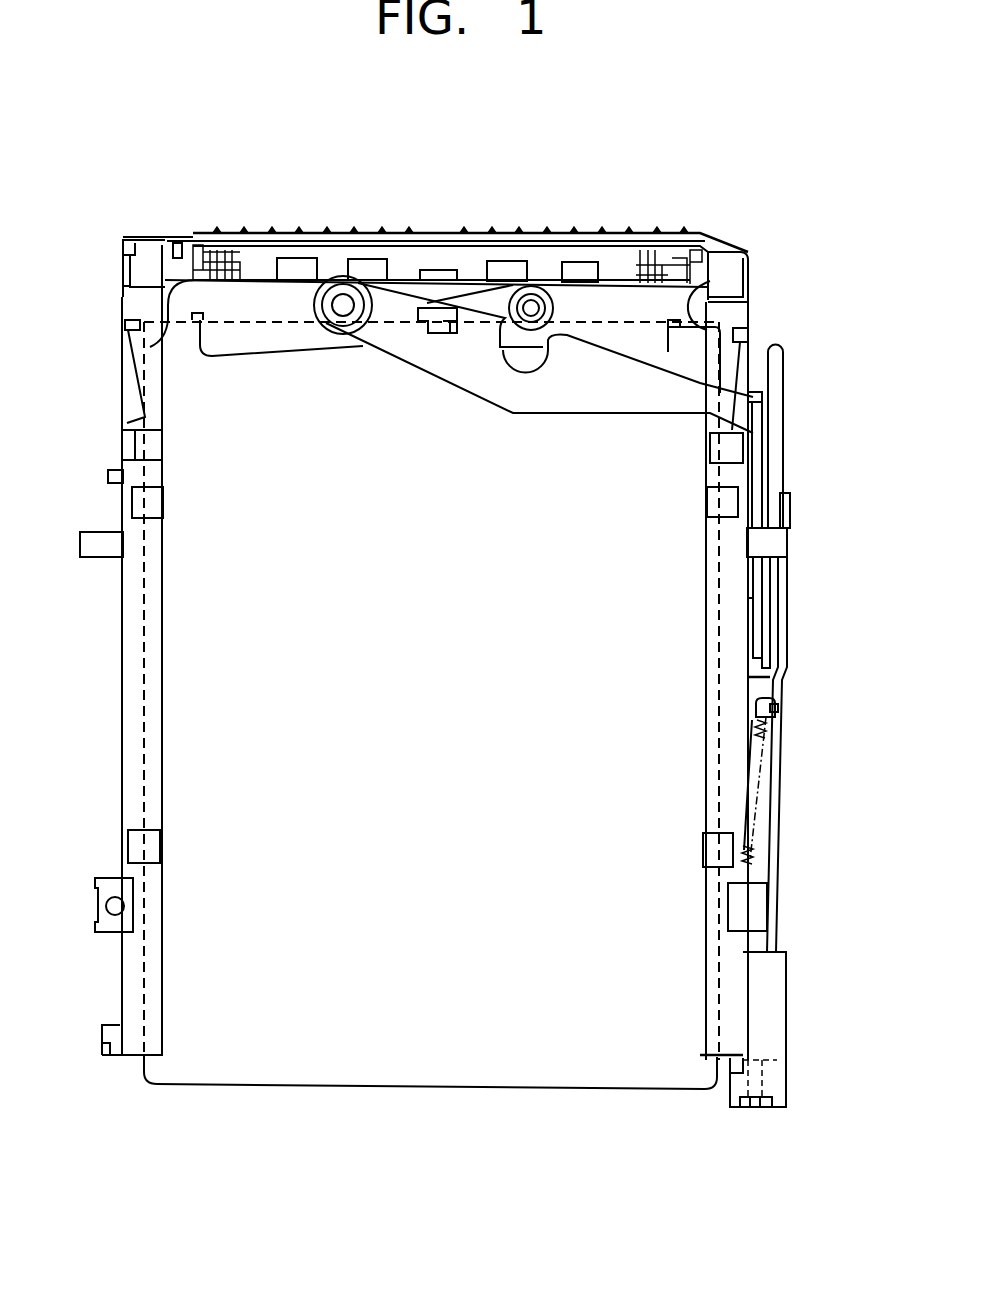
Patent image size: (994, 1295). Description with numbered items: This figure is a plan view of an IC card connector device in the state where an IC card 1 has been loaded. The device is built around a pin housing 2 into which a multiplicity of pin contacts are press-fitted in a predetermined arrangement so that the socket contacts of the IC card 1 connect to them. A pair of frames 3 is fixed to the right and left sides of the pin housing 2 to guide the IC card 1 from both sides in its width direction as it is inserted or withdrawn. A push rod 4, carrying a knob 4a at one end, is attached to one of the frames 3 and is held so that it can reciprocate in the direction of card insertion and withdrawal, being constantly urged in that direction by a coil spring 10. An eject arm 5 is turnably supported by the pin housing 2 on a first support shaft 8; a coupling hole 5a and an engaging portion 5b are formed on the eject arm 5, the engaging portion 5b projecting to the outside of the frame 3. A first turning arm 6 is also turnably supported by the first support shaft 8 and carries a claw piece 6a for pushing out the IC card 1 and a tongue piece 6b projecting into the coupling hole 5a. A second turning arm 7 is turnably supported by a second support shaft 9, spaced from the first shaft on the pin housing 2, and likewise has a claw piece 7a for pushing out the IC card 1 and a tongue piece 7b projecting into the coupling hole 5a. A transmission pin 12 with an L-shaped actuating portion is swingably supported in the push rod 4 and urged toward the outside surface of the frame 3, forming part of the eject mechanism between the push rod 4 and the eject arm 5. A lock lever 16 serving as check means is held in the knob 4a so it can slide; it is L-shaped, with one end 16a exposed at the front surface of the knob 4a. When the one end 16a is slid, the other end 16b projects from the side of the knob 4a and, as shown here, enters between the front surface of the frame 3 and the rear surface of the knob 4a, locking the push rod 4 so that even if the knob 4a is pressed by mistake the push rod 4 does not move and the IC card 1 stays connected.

The IC card 1 is at (452, 1040).
The pin housing 2 is at (543, 260).
The frames 3 is at (130, 640).
The push rod 4 is at (784, 470).
The knob 4a is at (773, 1020).
The eject arm 5 is at (590, 387).
The coupling hole 5a is at (417, 302).
The engaging portion 5b is at (762, 396).
The first turning arm 6 is at (256, 292).
The claw piece 6a is at (190, 322).
The tongue piece 6b is at (418, 328).
The second turning arm 7 is at (612, 300).
The claw piece 7a is at (700, 290).
The tongue piece 7b is at (453, 332).
The first support shaft 8 is at (343, 305).
The second support shaft 9 is at (531, 308).
The coil spring 10 is at (748, 858).
The transmission pin 12 is at (765, 567).
The lock lever 16 is at (777, 1073).
The one end of lock lever 16a is at (755, 1110).
The other end of lock lever 16b is at (726, 1068).